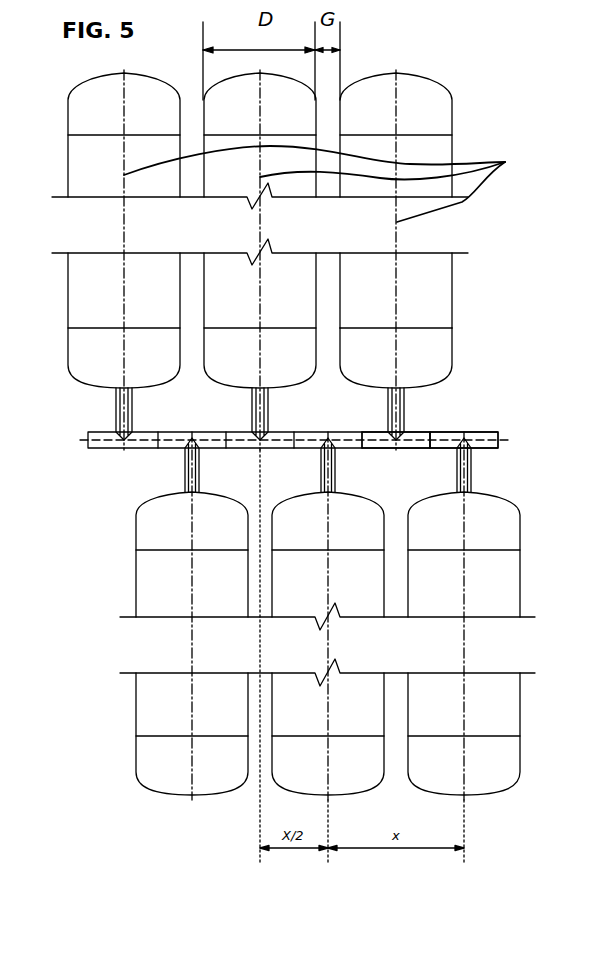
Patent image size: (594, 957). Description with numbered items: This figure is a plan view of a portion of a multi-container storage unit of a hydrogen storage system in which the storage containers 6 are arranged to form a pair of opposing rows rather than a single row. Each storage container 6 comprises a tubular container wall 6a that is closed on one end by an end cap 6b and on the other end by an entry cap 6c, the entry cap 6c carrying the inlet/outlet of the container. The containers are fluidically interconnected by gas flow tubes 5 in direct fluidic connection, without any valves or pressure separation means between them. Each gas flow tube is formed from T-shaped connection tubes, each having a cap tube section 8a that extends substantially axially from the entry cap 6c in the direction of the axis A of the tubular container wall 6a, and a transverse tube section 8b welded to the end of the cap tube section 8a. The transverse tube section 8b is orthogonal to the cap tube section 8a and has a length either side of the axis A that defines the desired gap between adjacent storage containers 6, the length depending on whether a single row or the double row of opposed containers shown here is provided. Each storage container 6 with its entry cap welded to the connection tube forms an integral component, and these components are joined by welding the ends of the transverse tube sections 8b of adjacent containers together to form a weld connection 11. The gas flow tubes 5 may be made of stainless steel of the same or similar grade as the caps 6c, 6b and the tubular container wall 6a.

The gas flow tube 5 is at (288, 459).
The storage container 6 is at (301, 438).
The tubular container wall 6a is at (452, 280).
The end cap 6b is at (452, 110).
The entry cap 6c is at (452, 355).
The cap tube section 8a is at (400, 407).
The transverse tube section 8b is at (468, 433).
The weld connection 11 is at (362, 432).
The axis A is at (326, 183).